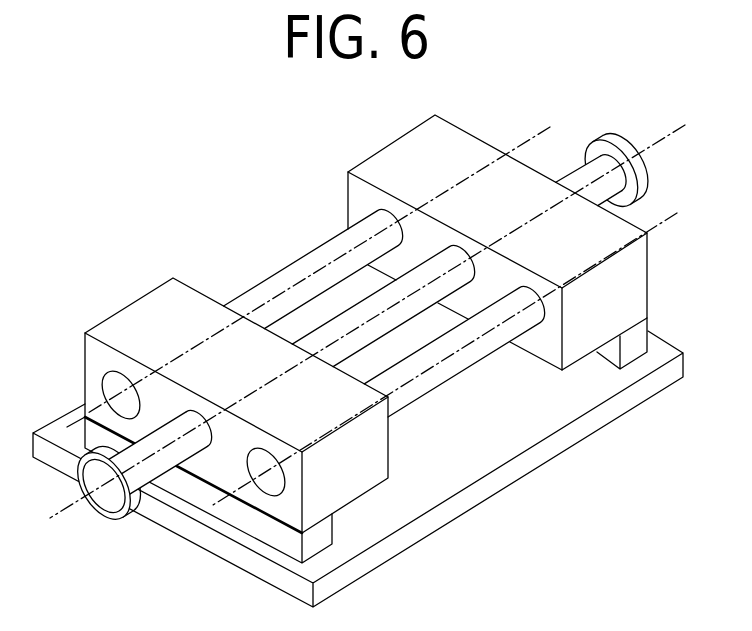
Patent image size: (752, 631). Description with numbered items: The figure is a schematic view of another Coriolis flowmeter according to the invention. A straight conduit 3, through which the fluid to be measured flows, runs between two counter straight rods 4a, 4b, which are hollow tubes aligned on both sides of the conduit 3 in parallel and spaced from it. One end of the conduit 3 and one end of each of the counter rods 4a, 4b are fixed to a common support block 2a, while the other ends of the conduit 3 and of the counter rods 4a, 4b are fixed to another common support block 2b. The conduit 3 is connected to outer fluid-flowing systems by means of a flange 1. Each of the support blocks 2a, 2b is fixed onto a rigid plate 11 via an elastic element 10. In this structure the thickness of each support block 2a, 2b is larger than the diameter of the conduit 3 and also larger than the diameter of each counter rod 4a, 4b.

The flange 1 is at (595, 133).
The common support block 2a is at (371, 170).
The common support block 2b is at (127, 335).
The straight conduit 3 is at (380, 307).
The counter straight rod 4a is at (293, 278).
The counter straight rod 4b is at (467, 357).
The elastic element 10 is at (635, 345).
The rigid plate 11 is at (488, 423).